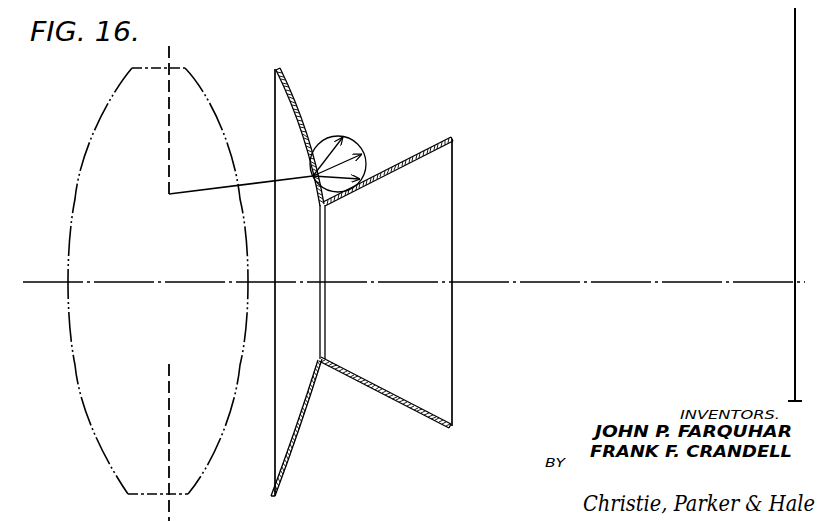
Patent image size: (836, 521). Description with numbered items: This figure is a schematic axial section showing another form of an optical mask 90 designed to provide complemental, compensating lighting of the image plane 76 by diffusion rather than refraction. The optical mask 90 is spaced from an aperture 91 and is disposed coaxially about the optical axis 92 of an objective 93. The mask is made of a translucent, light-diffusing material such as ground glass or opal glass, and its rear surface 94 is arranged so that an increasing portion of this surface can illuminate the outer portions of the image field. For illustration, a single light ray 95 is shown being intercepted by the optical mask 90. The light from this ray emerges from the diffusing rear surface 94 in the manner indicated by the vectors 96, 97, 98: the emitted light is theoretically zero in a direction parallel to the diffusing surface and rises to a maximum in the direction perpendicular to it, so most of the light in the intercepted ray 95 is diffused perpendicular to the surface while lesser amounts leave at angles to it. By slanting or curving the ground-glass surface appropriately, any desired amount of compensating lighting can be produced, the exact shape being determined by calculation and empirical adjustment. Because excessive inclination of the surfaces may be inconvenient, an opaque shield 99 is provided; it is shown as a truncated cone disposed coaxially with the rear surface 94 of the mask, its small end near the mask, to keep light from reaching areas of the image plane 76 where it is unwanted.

The image plane 76 is at (795, 108).
The optical mask 90 is at (288, 83).
The aperture 91 is at (172, 257).
The optical axis 92 is at (550, 283).
The objective 93 is at (90, 152).
The rear surface 94 is at (292, 108).
The light ray 95 is at (192, 193).
The vector 96 is at (341, 138).
The vector 97 is at (348, 153).
The vector 98 is at (363, 178).
The shield 99 is at (384, 180).